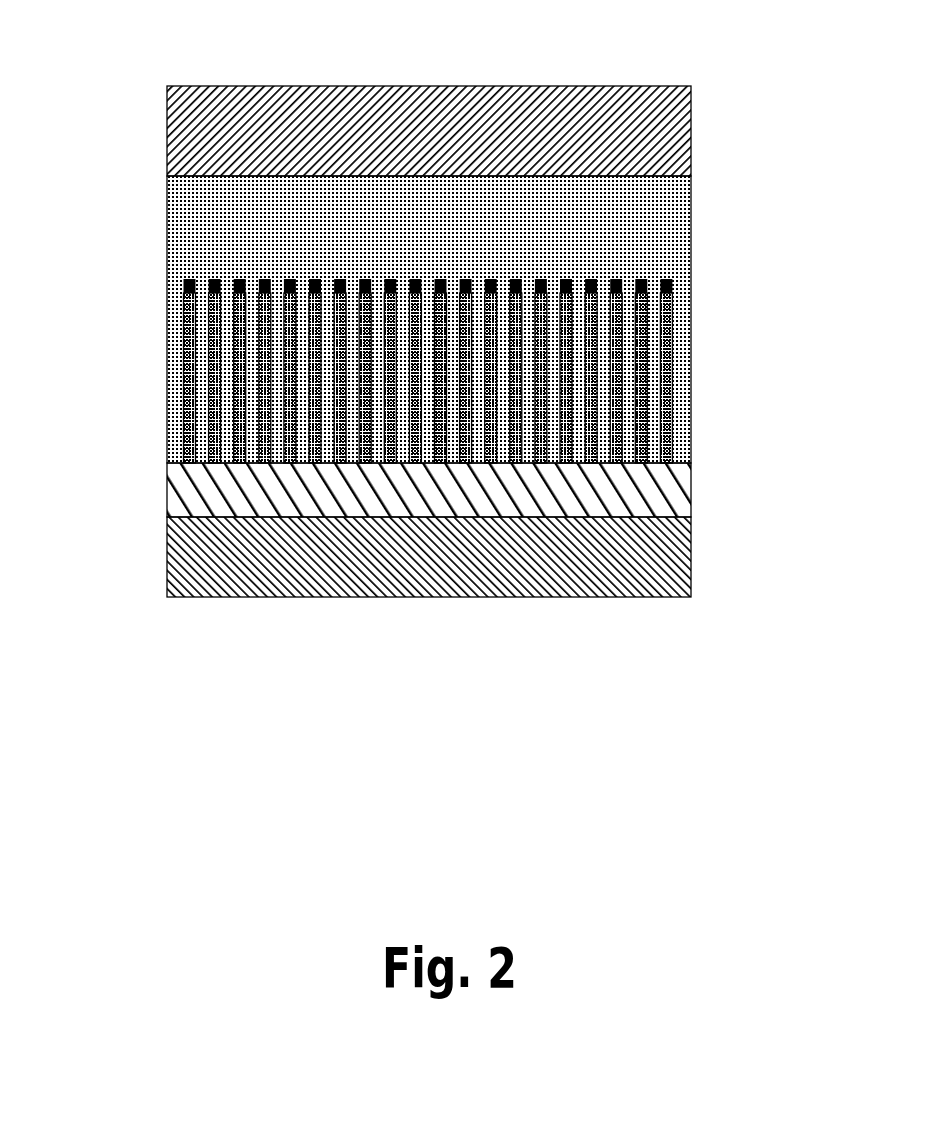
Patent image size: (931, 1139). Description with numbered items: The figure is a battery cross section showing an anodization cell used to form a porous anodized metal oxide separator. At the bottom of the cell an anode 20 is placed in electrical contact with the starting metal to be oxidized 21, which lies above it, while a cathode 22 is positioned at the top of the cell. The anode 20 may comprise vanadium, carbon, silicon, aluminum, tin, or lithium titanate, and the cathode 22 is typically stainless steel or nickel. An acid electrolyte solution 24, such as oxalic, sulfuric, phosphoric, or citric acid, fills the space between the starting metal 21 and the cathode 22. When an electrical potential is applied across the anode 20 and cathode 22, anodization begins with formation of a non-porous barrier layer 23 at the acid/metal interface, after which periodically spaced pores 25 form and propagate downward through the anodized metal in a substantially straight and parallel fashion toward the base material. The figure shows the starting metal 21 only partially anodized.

The anode 20 is at (352, 575).
The starting metal to be oxidized 21 is at (683, 493).
The cathode 22 is at (433, 100).
The non-porous barrier layer 23 is at (187, 284).
The acid electrolyte solution 24 is at (637, 223).
The pores 25 is at (200, 408).